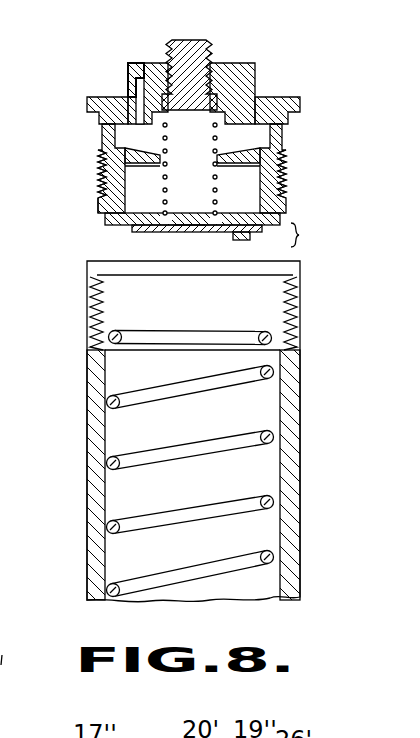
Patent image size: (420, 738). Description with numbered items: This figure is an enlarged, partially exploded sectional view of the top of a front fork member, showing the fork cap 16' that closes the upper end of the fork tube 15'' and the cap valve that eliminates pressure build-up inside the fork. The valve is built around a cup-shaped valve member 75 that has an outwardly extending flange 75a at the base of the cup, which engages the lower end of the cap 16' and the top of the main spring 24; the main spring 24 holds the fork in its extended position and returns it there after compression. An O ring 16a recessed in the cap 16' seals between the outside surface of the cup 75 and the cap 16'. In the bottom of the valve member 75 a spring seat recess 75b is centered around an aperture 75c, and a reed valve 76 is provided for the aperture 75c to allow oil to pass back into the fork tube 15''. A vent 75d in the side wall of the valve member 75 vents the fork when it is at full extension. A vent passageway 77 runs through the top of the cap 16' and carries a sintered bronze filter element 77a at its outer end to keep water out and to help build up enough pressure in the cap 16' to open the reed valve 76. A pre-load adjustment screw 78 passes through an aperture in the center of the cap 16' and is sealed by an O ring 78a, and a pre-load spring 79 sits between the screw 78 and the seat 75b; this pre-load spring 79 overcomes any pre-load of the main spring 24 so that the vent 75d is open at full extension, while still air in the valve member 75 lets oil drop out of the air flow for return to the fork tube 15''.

The fork tube 15'' is at (168, 431).
The fork cap 16' is at (161, 118).
The O ring 16a is at (100, 173).
The main spring 24 is at (110, 402).
The cup-shaped valve member 75 is at (158, 217).
The outwardly extending flange 75a is at (132, 228).
The spring seat recess 75b is at (163, 232).
The aperture 75c is at (190, 232).
The vent 75d is at (103, 192).
The reed valve 76 is at (213, 233).
The vent passageway 77 is at (138, 92).
The sintered bronze filter element 77a is at (131, 78).
The pre-load adjustment screw 78 is at (204, 62).
The O ring 78a is at (223, 98).
The pre-load spring 79 is at (163, 139).